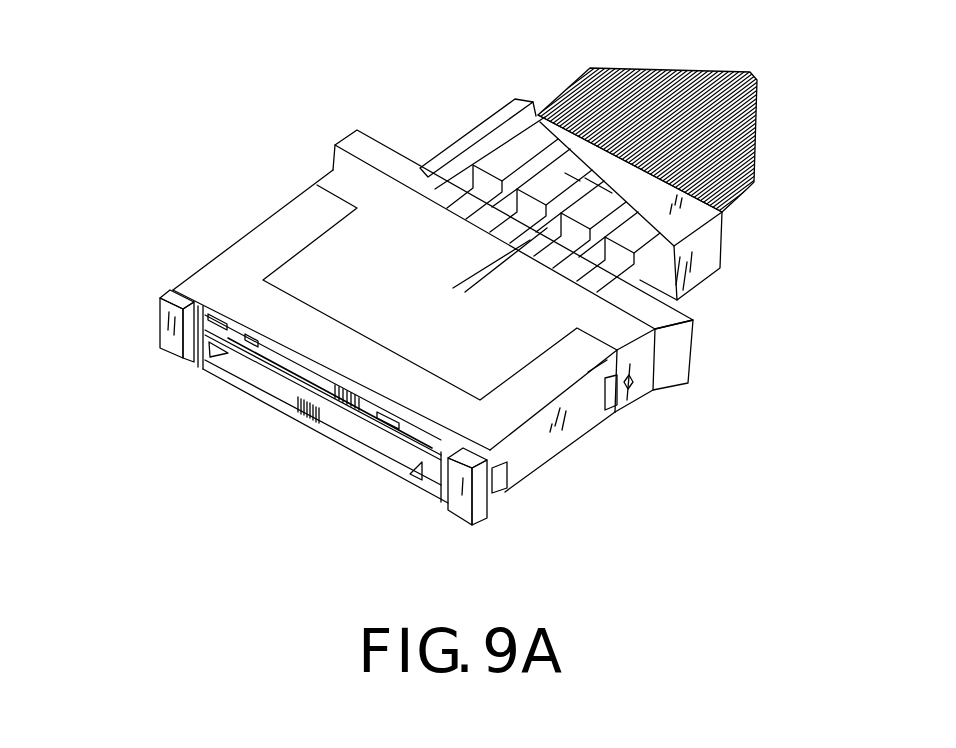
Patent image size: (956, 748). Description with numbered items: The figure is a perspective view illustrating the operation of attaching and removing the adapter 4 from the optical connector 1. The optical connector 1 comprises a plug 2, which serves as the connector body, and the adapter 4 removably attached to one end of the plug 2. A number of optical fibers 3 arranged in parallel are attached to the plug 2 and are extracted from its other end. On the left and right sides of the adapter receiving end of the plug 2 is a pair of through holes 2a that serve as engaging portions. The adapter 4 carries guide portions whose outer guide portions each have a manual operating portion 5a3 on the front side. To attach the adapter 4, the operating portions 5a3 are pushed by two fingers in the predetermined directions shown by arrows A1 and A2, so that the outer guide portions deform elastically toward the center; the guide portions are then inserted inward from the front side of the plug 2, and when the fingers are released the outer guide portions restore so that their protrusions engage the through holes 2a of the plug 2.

The optical connector 1 is at (326, 142).
The plug 2 is at (257, 220).
The through holes 2a is at (508, 479).
The optical fibers 3 is at (741, 196).
The adapter 4 is at (307, 424).
The manual operating portion 5a3 is at (170, 344).
The arrow A1 is at (154, 315).
The arrow A2 is at (497, 506).